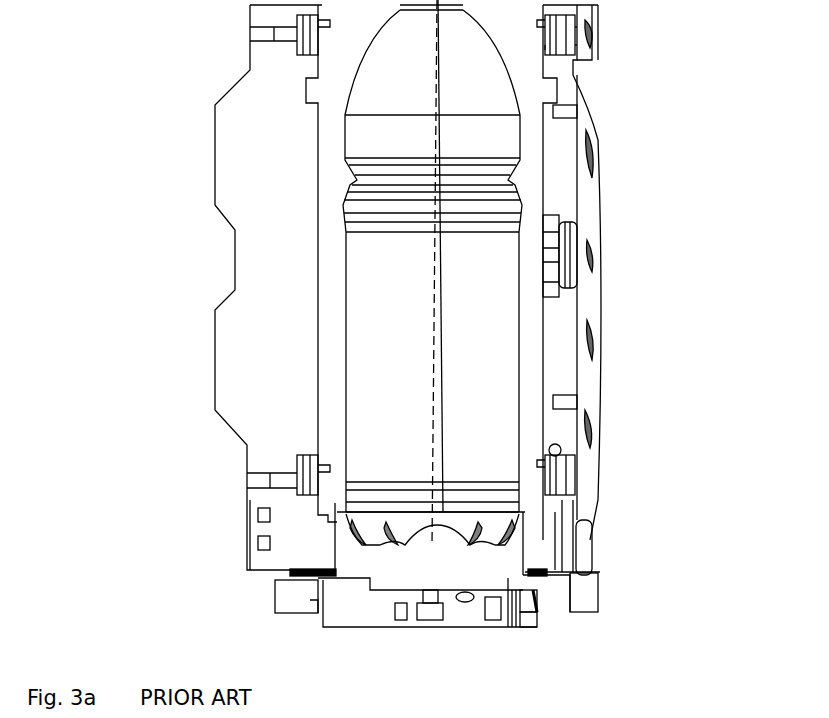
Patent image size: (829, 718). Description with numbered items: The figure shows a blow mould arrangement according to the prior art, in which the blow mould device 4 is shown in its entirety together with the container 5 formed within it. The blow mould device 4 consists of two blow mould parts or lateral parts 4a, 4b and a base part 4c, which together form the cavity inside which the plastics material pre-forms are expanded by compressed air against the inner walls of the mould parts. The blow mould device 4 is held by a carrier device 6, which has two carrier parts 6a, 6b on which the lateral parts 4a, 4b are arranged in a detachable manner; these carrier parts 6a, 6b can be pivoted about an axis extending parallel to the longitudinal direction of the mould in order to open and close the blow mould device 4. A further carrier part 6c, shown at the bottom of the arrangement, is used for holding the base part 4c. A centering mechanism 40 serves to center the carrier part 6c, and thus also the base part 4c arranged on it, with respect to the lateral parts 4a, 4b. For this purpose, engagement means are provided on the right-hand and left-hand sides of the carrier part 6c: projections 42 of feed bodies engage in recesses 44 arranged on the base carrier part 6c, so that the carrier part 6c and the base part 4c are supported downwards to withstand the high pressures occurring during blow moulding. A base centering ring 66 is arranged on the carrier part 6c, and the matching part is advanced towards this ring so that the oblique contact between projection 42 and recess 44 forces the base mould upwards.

The blow mould device 4 is at (563, 156).
The carrier device 6 is at (645, 124).
The carrier part 6a is at (572, 200).
The carrier part 6b is at (240, 322).
The bottle / container 5 is at (498, 304).
The lateral part 4a is at (533, 380).
The lateral part 4b is at (325, 413).
The base part 4c is at (518, 553).
The projection 42 is at (570, 590).
The centering mechanism 40 is at (622, 592).
The recess 44 is at (318, 582).
The carrier part 6c is at (536, 604).
The base centering ring 66 is at (528, 620).